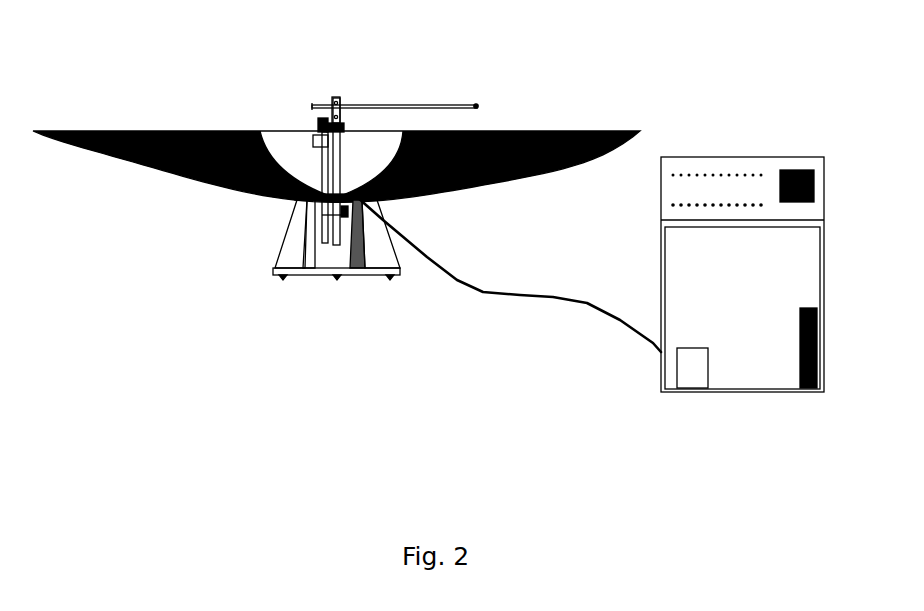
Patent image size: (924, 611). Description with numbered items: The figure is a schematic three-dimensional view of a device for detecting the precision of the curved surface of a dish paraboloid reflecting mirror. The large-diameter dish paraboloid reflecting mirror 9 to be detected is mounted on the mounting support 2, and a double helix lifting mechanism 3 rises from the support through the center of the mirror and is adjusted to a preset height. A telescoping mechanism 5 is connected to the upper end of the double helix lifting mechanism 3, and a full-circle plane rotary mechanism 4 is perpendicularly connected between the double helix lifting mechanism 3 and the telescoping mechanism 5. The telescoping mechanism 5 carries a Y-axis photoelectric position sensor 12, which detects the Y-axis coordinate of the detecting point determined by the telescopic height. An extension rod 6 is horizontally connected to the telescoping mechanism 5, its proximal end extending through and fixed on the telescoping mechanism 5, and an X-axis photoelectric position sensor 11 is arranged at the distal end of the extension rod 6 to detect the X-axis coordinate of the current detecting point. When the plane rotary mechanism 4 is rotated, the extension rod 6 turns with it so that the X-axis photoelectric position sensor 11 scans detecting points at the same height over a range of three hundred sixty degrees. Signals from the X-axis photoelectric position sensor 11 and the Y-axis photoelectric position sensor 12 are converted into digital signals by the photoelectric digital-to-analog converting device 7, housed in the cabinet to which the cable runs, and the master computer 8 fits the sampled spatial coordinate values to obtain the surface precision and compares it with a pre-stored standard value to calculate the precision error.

The mounting support 2 is at (293, 255).
The double helix lifting mechanism 3 is at (337, 165).
The 360-degree plane rotary mechanism 4 is at (322, 123).
The telescoping mechanism 5 is at (338, 100).
The extension rod 6 is at (393, 105).
The photoelectric digital-to-analog converting device 7 is at (680, 368).
The master computer 8 is at (800, 312).
The large-diameter dish paraboloid reflecting mirror 9 is at (528, 152).
The X-axis photoelectric position sensor 11 is at (476, 104).
The Y-axis photoelectric position sensor 12 is at (335, 107).